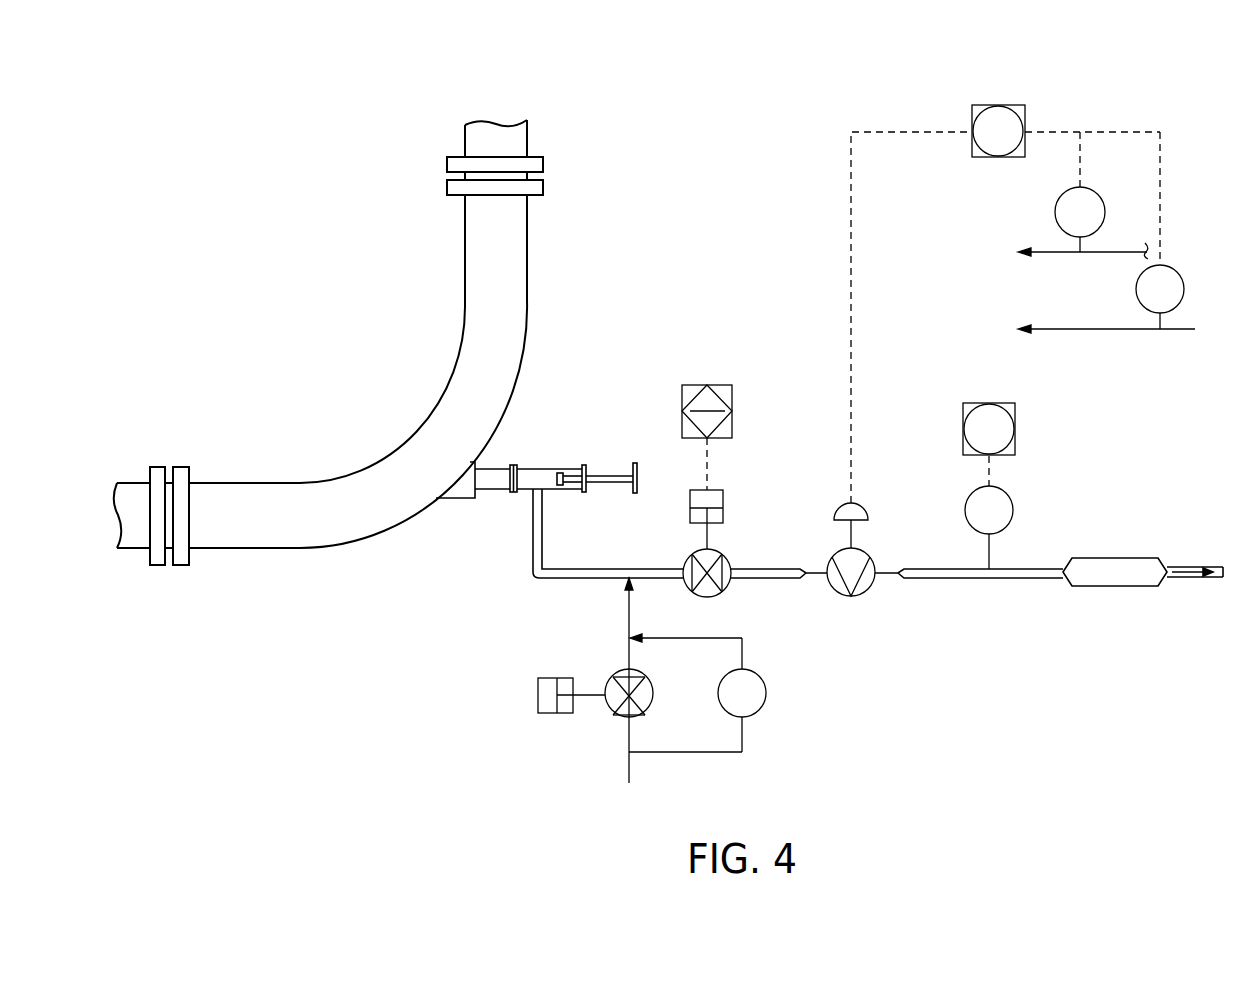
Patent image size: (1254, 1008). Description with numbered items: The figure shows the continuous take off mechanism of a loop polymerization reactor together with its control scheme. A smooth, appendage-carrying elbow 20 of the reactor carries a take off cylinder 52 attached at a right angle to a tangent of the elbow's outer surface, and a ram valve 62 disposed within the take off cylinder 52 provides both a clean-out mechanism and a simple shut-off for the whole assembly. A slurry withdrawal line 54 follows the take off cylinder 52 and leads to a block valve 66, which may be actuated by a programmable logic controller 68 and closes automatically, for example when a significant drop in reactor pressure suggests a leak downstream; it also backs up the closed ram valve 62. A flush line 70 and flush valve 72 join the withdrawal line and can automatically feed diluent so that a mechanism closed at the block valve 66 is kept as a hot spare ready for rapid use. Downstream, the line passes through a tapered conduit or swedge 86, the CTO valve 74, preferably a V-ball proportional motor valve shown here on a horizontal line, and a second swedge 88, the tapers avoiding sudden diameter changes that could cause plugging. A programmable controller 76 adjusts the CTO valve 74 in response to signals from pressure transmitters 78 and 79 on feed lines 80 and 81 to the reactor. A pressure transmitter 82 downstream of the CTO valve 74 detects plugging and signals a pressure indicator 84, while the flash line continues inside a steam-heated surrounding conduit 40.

The elbow 20 is at (528, 258).
The surrounding conduit 40 is at (1103, 558).
The take off cylinder 52 is at (488, 467).
The slurry withdrawal line 54 is at (532, 526).
The ram valve 62 is at (561, 470).
The block valve 66 is at (720, 551).
The programmable logic controller 68 is at (698, 385).
The flush line 70 is at (627, 615).
The flush valve 72 is at (613, 720).
The CTO valve 74 is at (862, 547).
The programmable controller 76 is at (990, 106).
The pressure transmitter 78 is at (1060, 203).
The pressure transmitter 79 is at (1176, 269).
The feed line 80 is at (1049, 254).
The feed line 81 is at (1077, 328).
The pressure transmitter 82 is at (1003, 492).
The pressure indicator 84 is at (1002, 403).
The tapered conduit or swedge 86 is at (801, 582).
The tapered conduit or swedge 88 is at (900, 578).